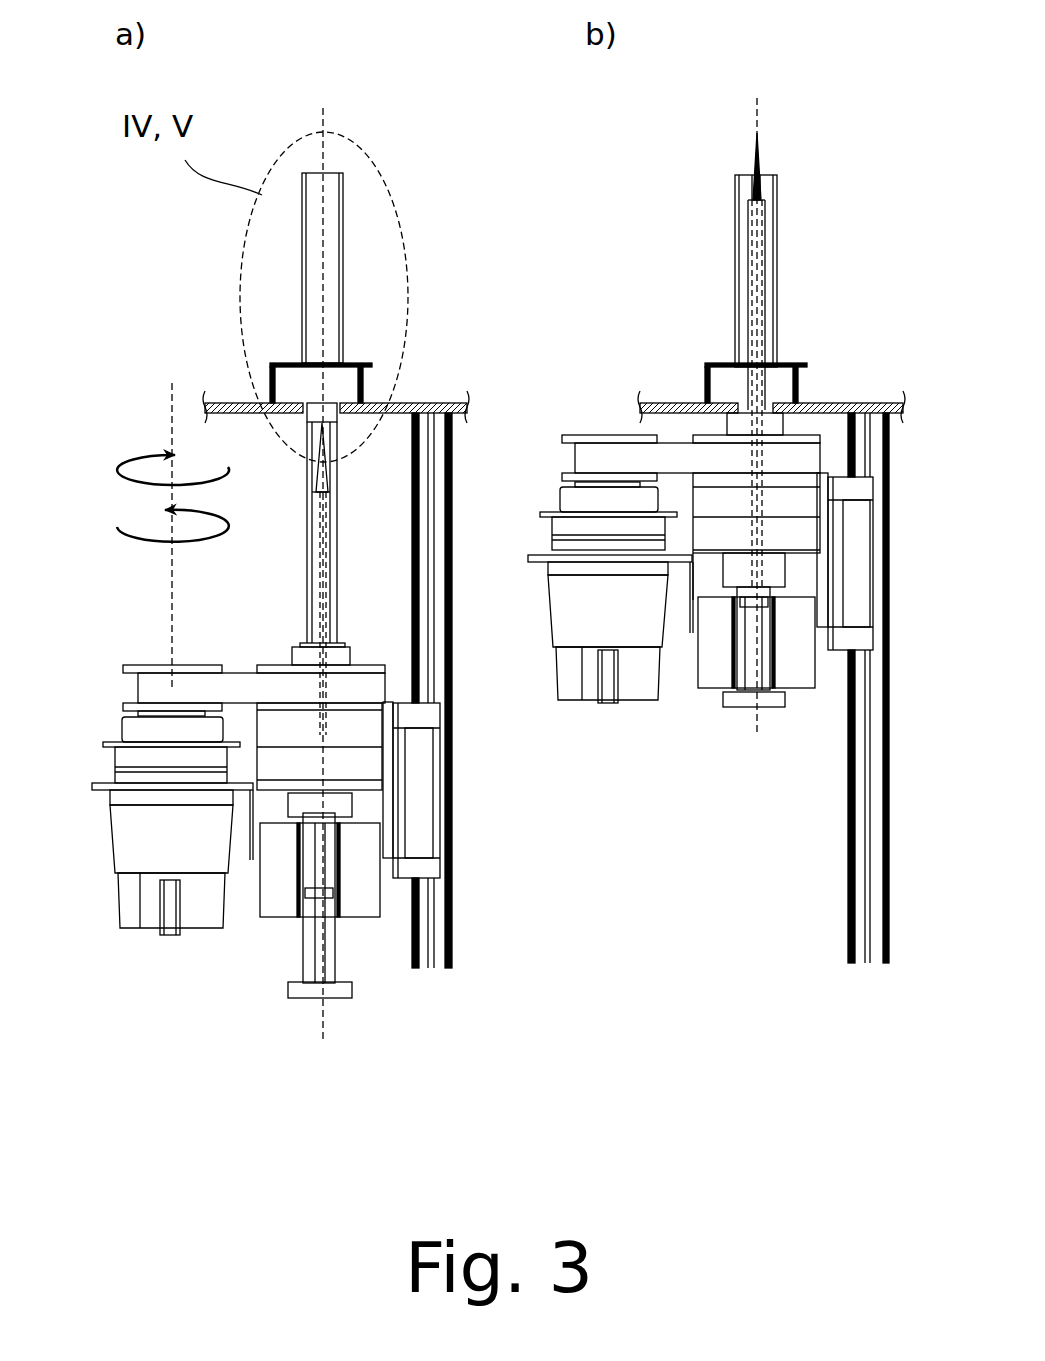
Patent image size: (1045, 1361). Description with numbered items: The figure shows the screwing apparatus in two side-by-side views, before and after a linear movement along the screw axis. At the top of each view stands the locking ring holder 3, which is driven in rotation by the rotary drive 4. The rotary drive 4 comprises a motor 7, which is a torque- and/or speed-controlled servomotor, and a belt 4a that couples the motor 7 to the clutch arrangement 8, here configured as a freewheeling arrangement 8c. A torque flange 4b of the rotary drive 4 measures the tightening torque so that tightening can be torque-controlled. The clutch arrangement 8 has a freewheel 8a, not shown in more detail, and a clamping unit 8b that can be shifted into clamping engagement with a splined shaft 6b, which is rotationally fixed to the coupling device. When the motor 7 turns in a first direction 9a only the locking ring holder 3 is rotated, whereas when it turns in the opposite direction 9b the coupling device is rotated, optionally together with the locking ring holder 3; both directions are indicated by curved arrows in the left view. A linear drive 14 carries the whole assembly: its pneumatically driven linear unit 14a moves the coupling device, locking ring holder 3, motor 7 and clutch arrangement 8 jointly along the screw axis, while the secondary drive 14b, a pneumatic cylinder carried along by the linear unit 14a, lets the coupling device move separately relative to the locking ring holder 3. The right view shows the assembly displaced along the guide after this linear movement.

The locking ring holder 3 is at (330, 405).
The rotary drive 4 is at (90, 797).
The belt 4a is at (228, 690).
The torque flange 4b is at (143, 753).
The splined shaft 6b is at (330, 950).
The motor 7 is at (133, 848).
The clutch arrangement 8 is at (416, 790).
The freewheel 8a is at (352, 708).
The clamping unit 8b is at (278, 900).
The freewheeling arrangement 8c is at (381, 650).
The first direction 9a is at (120, 532).
The opposite direction 9b is at (118, 472).
The linear drive 14 is at (900, 508).
The linear unit 14a is at (860, 598).
The secondary drive 14b is at (742, 660).